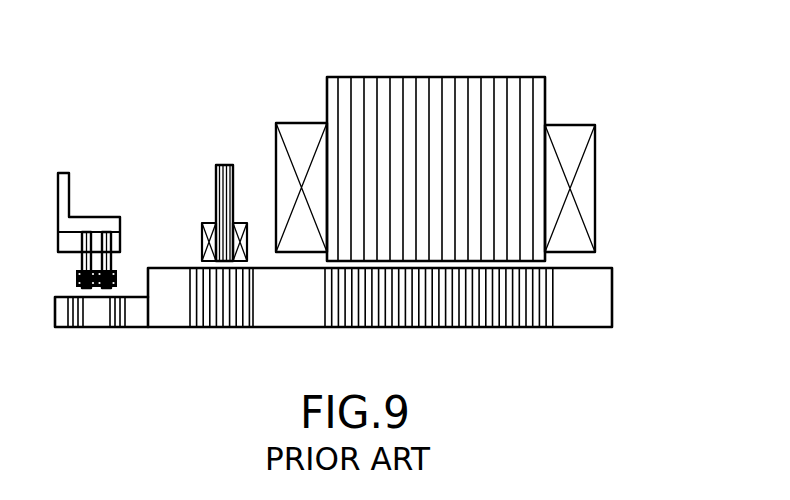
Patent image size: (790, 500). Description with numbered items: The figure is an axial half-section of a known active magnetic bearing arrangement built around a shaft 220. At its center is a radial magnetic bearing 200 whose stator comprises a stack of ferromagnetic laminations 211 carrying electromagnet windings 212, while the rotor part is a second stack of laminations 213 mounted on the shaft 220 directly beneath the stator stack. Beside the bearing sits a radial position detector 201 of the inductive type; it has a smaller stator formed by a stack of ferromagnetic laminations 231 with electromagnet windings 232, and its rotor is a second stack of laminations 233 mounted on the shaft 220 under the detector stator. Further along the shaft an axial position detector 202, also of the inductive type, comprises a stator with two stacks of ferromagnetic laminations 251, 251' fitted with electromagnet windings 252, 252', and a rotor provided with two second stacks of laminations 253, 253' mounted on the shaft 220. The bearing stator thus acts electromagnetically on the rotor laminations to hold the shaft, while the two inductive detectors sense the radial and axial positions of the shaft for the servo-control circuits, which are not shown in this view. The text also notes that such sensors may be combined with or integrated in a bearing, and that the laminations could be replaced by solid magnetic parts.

The radial magnetic bearing 200 is at (436, 74).
The stack of ferromagnetic laminations 211 is at (538, 98).
The electromagnet windings 212 is at (580, 176).
The shaft 220 is at (616, 296).
The second stack of laminations 233 is at (228, 312).
The second stack of laminations 213 is at (503, 312).
The axial position detector 202 is at (89, 337).
The second stack of laminations 253 is at (60, 332).
The second stack of laminations 253' is at (131, 332).
The stack of ferromagnetic laminations 251 is at (46, 259).
The stack of ferromagnetic laminations 251' is at (137, 244).
The electromagnet windings 252 is at (49, 284).
The electromagnet windings 252' is at (141, 259).
The radial position detector 201 is at (217, 160).
The stack of ferromagnetic laminations 231 is at (225, 183).
The electromagnet windings 232 is at (208, 224).